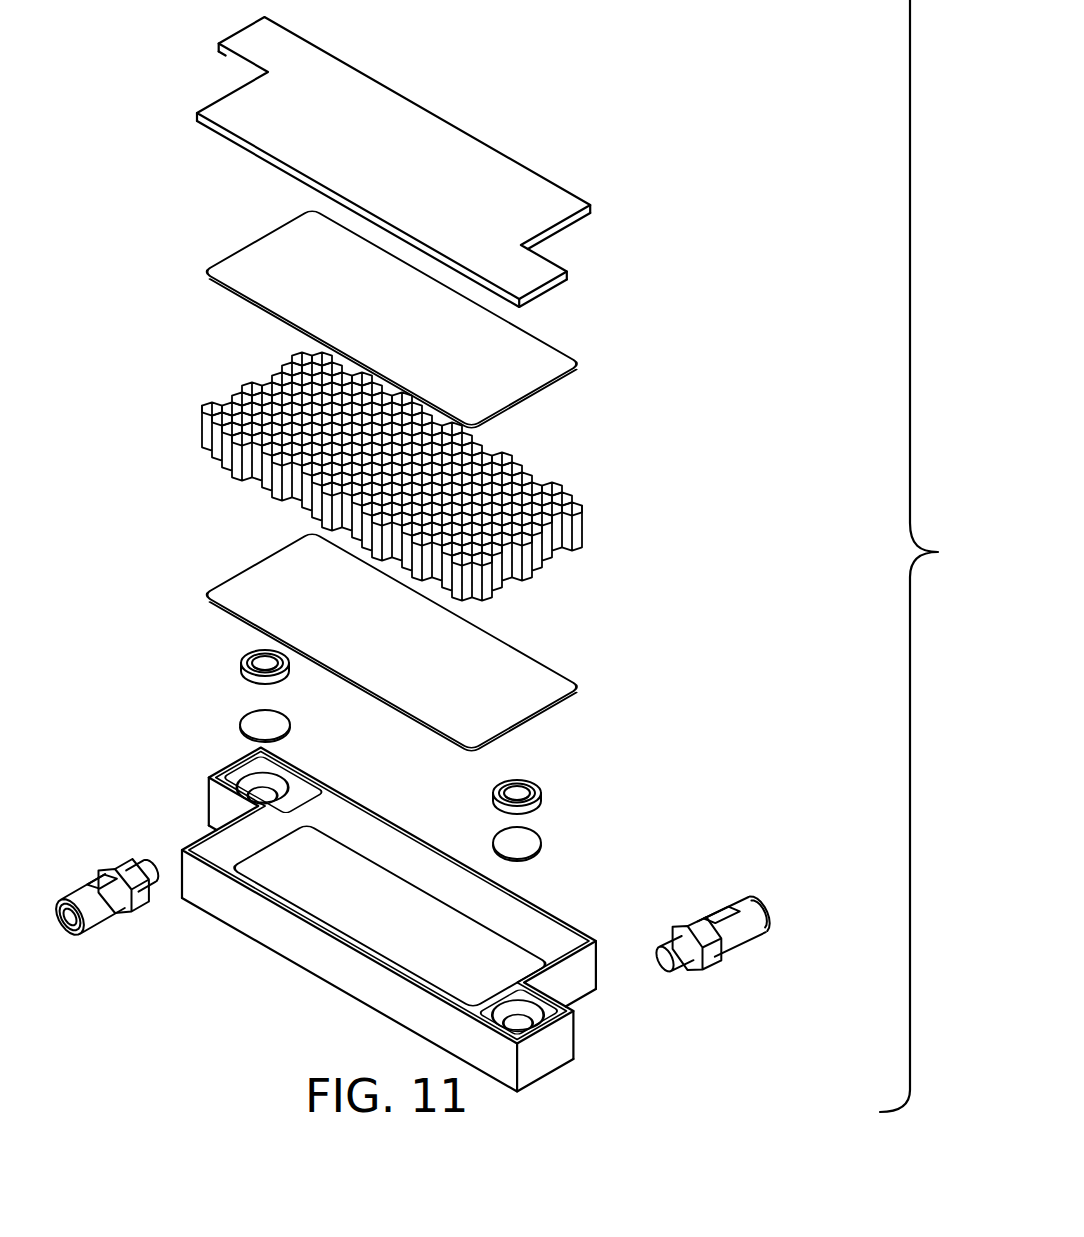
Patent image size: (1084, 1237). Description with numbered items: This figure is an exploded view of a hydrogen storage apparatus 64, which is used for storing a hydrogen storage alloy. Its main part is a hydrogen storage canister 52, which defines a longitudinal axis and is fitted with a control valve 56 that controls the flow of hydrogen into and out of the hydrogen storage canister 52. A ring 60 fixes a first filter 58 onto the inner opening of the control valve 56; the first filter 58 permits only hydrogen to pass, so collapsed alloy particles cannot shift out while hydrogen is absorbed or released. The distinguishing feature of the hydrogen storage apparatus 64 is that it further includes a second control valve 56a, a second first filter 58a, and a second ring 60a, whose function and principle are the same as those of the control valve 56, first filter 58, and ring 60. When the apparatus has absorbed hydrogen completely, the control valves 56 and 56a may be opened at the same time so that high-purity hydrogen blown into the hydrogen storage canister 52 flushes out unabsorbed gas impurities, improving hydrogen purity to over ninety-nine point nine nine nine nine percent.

The hydrogen storage apparatus 64 is at (650, 106).
The hydrogen storage canister 52 is at (205, 803).
The control valve 56 is at (757, 907).
The control valve 56a is at (107, 918).
The first filter 58 is at (542, 843).
The first filter 58a is at (242, 733).
The ring 60 is at (540, 790).
The ring 60a is at (240, 673).